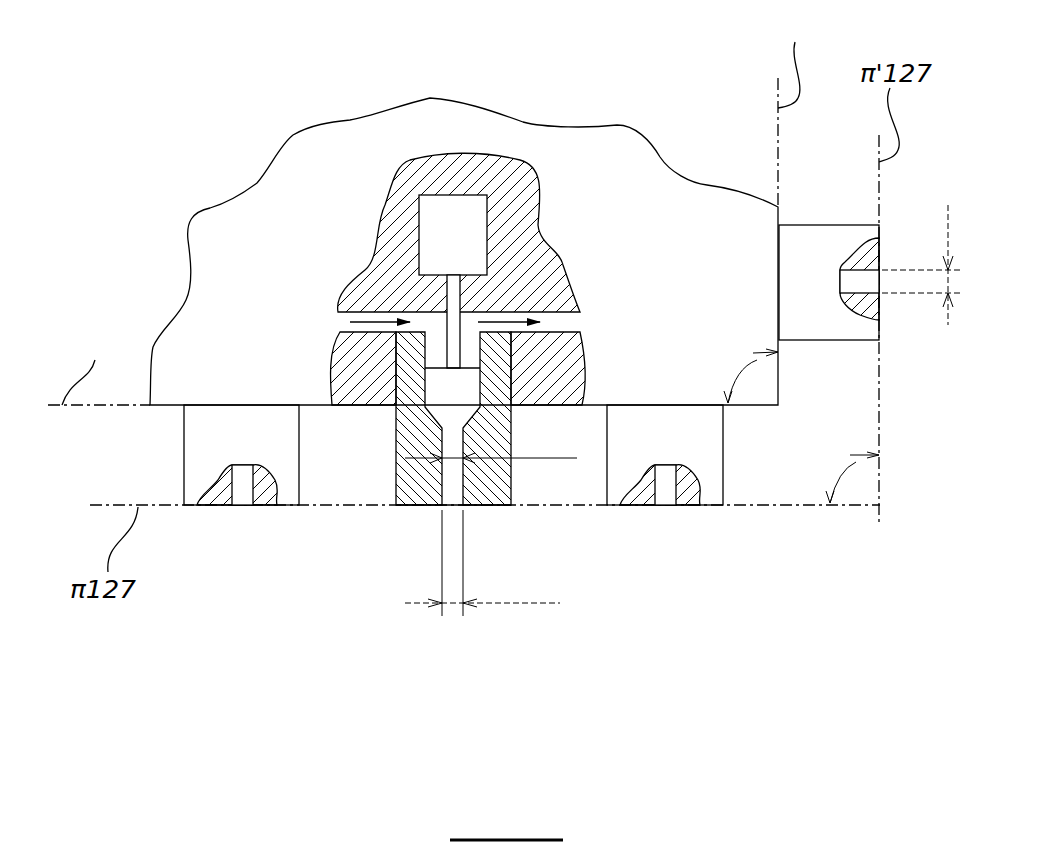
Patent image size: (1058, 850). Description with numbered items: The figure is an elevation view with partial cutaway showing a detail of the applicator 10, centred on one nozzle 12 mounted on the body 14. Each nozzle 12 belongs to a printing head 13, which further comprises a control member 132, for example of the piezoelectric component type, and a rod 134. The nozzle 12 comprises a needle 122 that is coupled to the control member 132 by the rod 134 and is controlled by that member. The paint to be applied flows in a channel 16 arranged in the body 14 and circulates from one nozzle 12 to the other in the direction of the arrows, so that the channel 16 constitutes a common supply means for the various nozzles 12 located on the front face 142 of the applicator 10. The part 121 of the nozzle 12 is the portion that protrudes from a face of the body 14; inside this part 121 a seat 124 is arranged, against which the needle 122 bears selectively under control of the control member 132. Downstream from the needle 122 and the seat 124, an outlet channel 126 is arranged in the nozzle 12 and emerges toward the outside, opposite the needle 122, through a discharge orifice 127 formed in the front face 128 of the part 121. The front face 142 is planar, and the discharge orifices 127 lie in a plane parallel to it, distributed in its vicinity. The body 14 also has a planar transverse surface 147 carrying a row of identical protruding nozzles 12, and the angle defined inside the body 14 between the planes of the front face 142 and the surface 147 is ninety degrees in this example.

The applicator 10 is at (218, 170).
The nozzle 12 is at (496, 359).
The printing head 13 is at (281, 190).
The body 14 is at (205, 322).
The channel 16 is at (550, 323).
The part of a nozzle 121 is at (415, 482).
The needle 122 is at (447, 407).
The seat 124 is at (452, 388).
The outlet channel 126 is at (240, 467).
The discharge orifice 127 is at (240, 506).
The front face 128 is at (408, 507).
The control member 132 is at (447, 240).
The rod 134 is at (455, 300).
The front face 142 is at (158, 406).
The transverse surface 147 is at (782, 391).